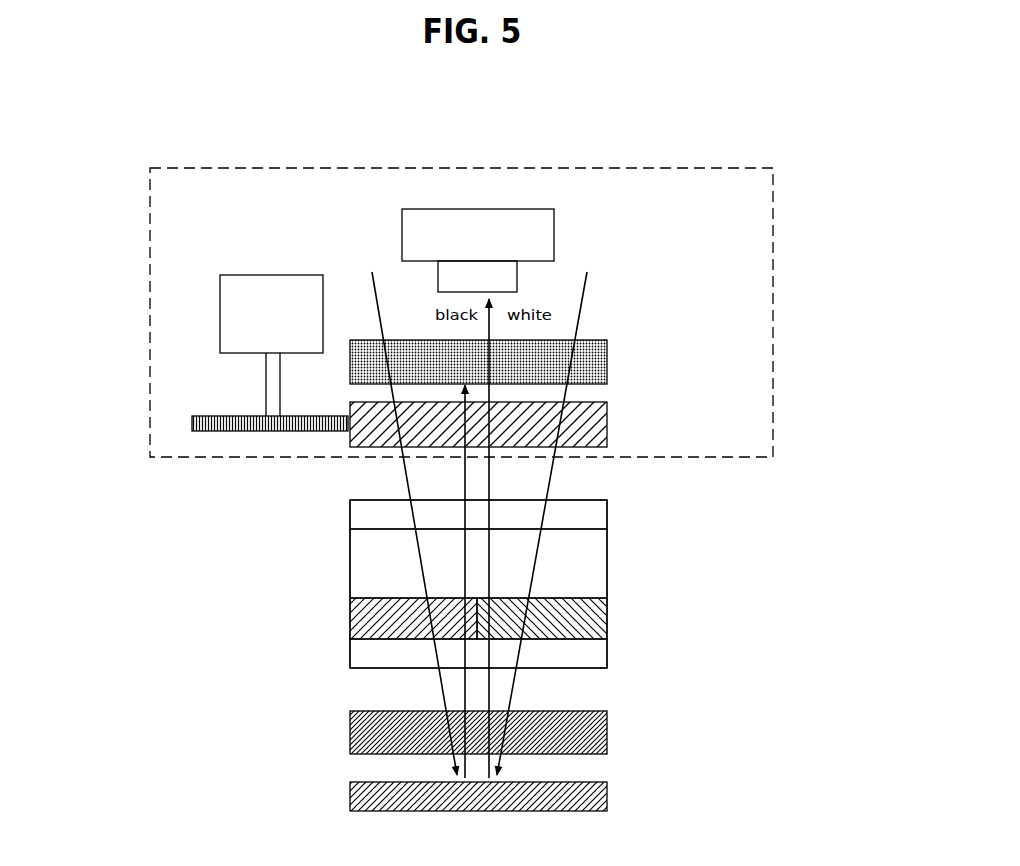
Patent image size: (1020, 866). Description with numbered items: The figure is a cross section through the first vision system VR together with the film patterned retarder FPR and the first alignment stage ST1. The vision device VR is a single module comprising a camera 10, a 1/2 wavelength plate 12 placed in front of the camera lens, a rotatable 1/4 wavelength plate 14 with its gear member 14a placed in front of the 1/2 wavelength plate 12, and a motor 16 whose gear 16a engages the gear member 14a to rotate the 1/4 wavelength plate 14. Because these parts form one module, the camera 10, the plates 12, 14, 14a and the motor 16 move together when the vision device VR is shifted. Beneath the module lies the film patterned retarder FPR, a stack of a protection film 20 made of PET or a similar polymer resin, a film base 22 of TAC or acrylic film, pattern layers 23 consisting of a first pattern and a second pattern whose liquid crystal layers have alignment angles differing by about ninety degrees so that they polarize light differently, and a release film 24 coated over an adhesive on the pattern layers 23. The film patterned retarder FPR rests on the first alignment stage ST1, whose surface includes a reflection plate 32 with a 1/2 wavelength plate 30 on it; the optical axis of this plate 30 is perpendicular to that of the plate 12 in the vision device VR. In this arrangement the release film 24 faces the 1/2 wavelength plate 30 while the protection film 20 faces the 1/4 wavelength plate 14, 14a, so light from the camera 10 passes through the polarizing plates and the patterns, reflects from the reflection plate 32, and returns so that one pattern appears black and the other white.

The camera 10 is at (554, 237).
The 1/2 wavelength plate 12 is at (607, 362).
The rotatable 1/4 wavelength plate 14 is at (607, 424).
The gear member 14a is at (607, 425).
The motor 16 is at (272, 275).
The gear 16a is at (205, 416).
The protection film 20 is at (607, 515).
The film base 22 is at (607, 563).
The pattern layers 23 is at (643, 620).
The release film 24 is at (607, 655).
The 1/2 wavelength plate 30 is at (607, 735).
The reflection plate 32 is at (607, 800).
The vision device VR is at (613, 168).
The film patterned retarder FPR is at (216, 665).
The first alignment stage ST1 is at (322, 712).